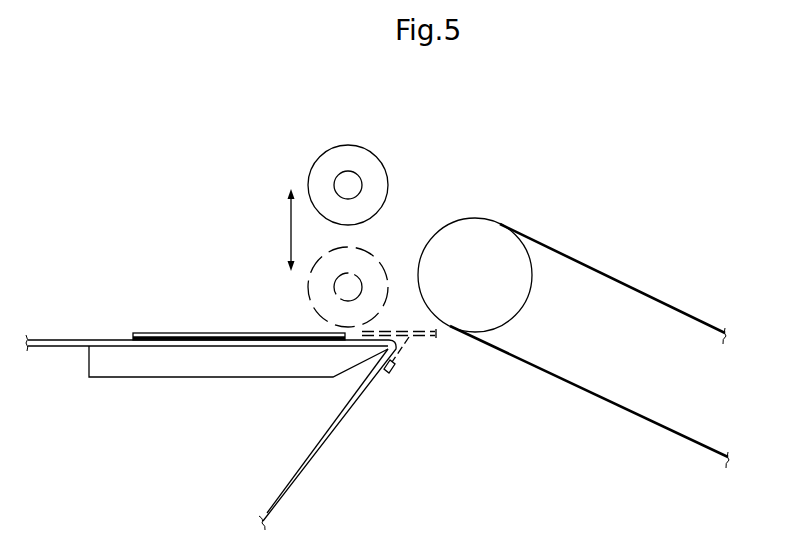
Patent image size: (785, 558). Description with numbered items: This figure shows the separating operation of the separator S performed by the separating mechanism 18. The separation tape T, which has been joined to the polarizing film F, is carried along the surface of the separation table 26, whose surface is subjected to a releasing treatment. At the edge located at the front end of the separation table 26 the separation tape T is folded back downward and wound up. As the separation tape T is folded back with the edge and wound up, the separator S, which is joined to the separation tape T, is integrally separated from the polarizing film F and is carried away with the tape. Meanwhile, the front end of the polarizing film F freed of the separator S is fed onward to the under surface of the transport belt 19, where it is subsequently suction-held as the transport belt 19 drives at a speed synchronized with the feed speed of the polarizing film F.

The separating mechanism 18 is at (240, 169).
The transport belt 19 is at (587, 226).
The separation table 26 is at (89, 377).
The separator S is at (130, 340).
The polarizing film F is at (231, 333).
The separation tape T is at (320, 494).